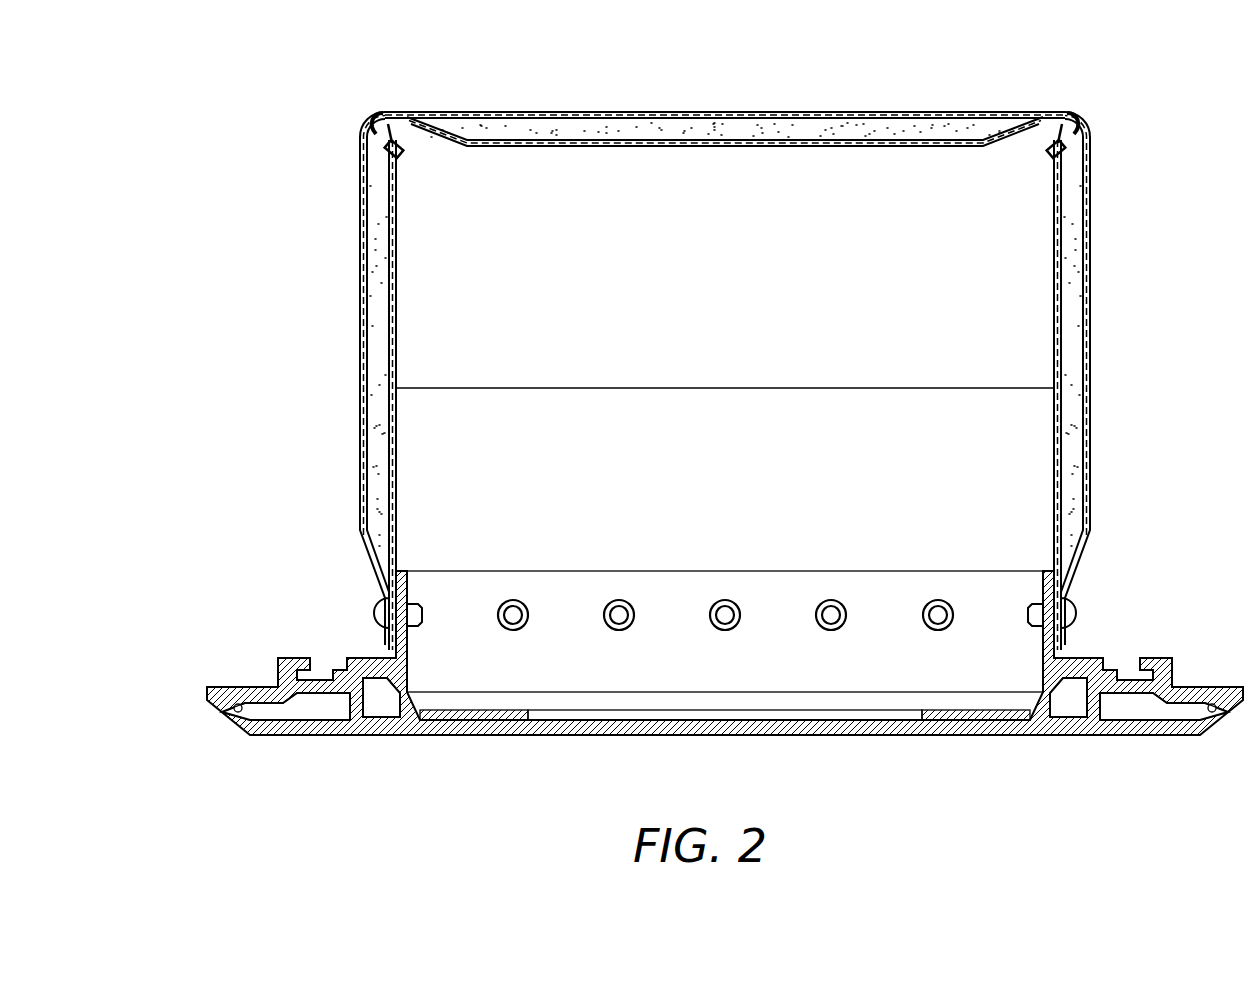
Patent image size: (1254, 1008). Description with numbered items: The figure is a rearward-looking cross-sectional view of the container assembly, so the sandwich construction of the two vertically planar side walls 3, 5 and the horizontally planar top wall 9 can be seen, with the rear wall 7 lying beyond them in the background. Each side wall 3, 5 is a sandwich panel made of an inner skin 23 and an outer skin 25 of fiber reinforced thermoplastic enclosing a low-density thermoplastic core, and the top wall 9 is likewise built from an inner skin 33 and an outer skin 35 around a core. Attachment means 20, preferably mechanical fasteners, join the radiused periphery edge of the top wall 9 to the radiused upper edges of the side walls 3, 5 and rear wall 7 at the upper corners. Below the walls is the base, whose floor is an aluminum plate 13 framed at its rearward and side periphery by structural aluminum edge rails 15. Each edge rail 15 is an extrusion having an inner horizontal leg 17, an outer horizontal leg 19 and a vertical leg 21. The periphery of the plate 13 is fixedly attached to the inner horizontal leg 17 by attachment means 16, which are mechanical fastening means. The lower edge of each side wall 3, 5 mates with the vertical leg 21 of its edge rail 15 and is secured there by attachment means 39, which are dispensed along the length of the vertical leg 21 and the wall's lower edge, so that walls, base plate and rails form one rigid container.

The side wall 3 is at (378, 375).
The side wall 5 is at (1073, 375).
The rear wall 7 is at (809, 333).
The top wall 9 is at (738, 112).
The plate 13 is at (697, 720).
The edge rail 15 is at (410, 735).
The attachment means 16 is at (480, 735).
The inner horizontal leg 17 is at (498, 711).
The outer horizontal leg 19 is at (355, 735).
The attachment means 20 is at (400, 156).
The vertical leg 21 is at (787, 580).
The inner skin 23 is at (398, 464).
The outer skin 25 is at (367, 440).
The inner skin 33 is at (781, 147).
The outer skin 35 is at (856, 112).
The attachment means 39 is at (618, 602).